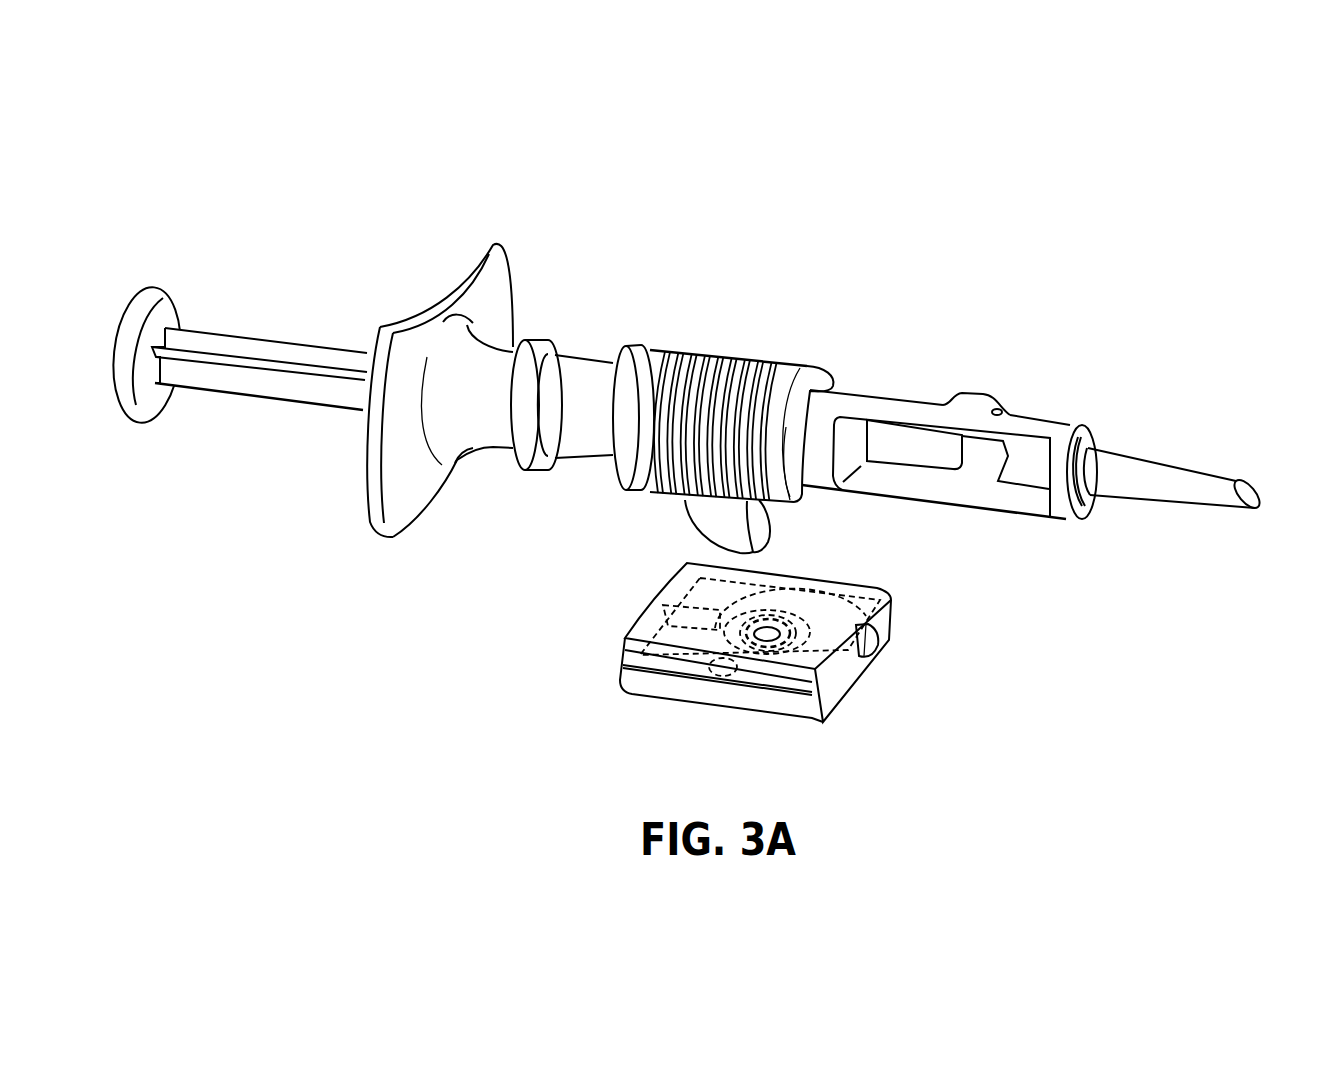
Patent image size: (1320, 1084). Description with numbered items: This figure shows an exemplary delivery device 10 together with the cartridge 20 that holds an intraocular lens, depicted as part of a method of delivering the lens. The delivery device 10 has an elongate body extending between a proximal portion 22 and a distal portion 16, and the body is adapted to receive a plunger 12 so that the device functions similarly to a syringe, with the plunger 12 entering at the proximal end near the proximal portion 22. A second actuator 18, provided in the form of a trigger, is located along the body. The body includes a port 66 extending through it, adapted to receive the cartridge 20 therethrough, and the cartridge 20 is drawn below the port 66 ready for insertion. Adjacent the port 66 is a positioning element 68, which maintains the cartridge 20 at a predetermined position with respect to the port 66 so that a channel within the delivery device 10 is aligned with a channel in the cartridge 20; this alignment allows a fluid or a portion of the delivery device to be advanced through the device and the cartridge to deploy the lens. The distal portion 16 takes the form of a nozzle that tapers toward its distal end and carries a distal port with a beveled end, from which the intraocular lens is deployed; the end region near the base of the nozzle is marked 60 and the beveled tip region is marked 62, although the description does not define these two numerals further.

The delivery device 10 is at (321, 163).
The plunger 12 is at (250, 302).
The proximal portion 22 is at (451, 250).
The second actuator 18 is at (672, 512).
The port 66 is at (900, 445).
The positioning element 68 is at (985, 395).
The distal end cap 60 is at (1120, 440).
The distal portion 16 is at (1192, 448).
The nozzle tip 62 is at (1258, 462).
The cartridge 20 is at (860, 710).